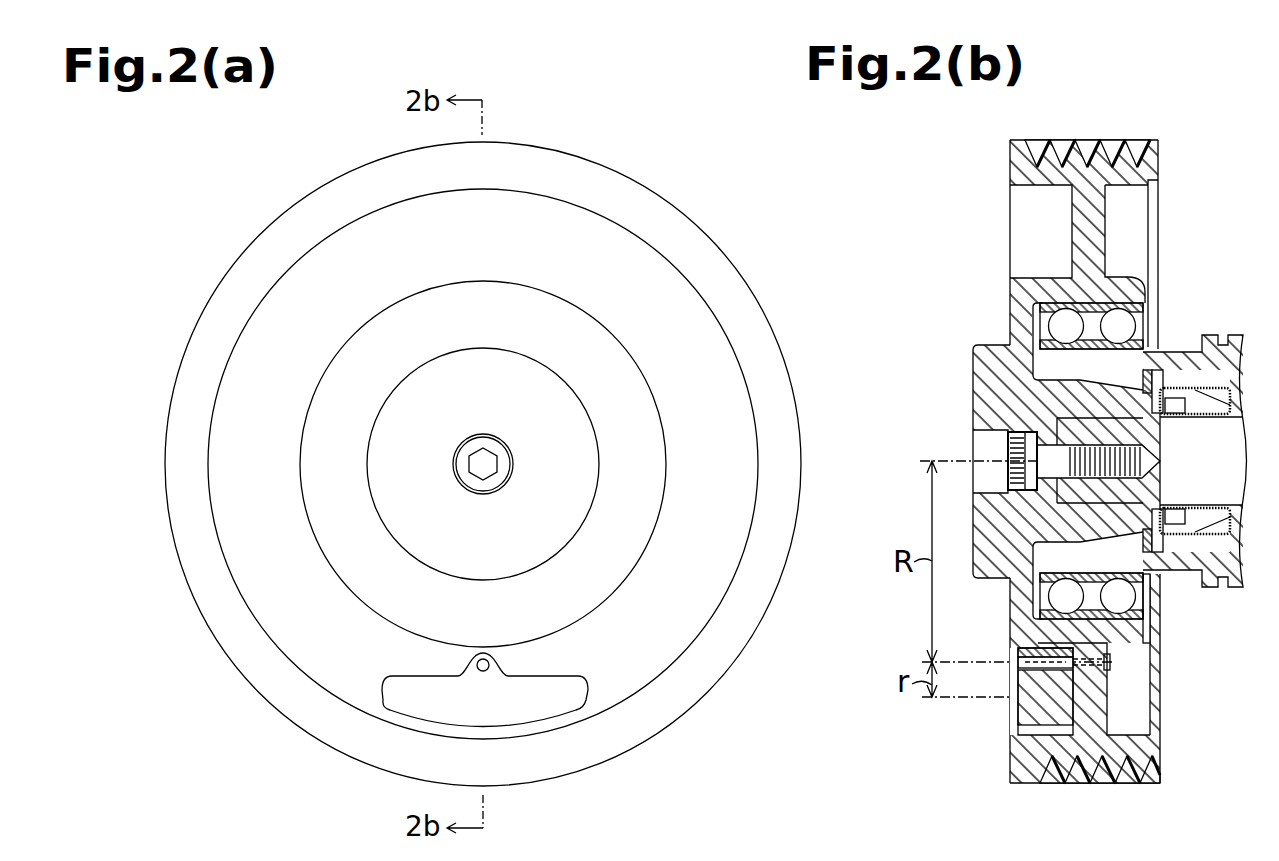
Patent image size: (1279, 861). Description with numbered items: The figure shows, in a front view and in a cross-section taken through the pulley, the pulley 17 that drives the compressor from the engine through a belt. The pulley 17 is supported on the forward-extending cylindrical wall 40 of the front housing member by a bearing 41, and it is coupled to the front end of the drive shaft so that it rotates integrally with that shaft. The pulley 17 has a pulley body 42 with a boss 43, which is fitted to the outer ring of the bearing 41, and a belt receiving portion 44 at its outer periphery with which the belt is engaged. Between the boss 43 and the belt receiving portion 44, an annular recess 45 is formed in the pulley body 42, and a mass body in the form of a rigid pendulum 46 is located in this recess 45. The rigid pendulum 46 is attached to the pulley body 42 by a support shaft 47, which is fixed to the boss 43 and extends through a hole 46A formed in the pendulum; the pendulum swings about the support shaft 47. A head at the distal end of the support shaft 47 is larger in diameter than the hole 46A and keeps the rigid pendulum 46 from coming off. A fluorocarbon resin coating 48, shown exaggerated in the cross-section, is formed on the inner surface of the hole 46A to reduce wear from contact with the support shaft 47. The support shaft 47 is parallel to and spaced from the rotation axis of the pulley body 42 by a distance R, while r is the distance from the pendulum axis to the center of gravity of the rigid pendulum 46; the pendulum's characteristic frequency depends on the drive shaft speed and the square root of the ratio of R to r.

In FIG. 2A, the pulley 17 is at (676, 171).
In FIG. 2B, the pulley 17 is at (1170, 187).
In FIG. 2B, the cylindrical wall 40 is at (1135, 362).
In FIG. 2B, the bearing 41 is at (1140, 322).
In FIG. 2A, the pulley body 42 is at (700, 225).
In FIG. 2B, the pulley body 42 is at (1162, 230).
In FIG. 2B, the boss 43 is at (1130, 283).
In FIG. 2A, the belt receiving portion 44 is at (747, 296).
In FIG. 2B, the belt receiving portion 44 is at (1010, 166).
In FIG. 2A, the annular recess 45 is at (748, 398).
In FIG. 2B, the annular recess 45 is at (1015, 738).
In FIG. 2A, the rigid pendulum 46 is at (555, 676).
In FIG. 2B, the rigid pendulum 46 is at (1016, 713).
In FIG. 2B, the hole 46A is at (1077, 668).
In FIG. 2A, the support shaft 47 is at (490, 657).
In FIG. 2B, the support shaft 47 is at (1018, 656).
In FIG. 2B, the fluorocarbon resin coating 48 is at (1090, 643).